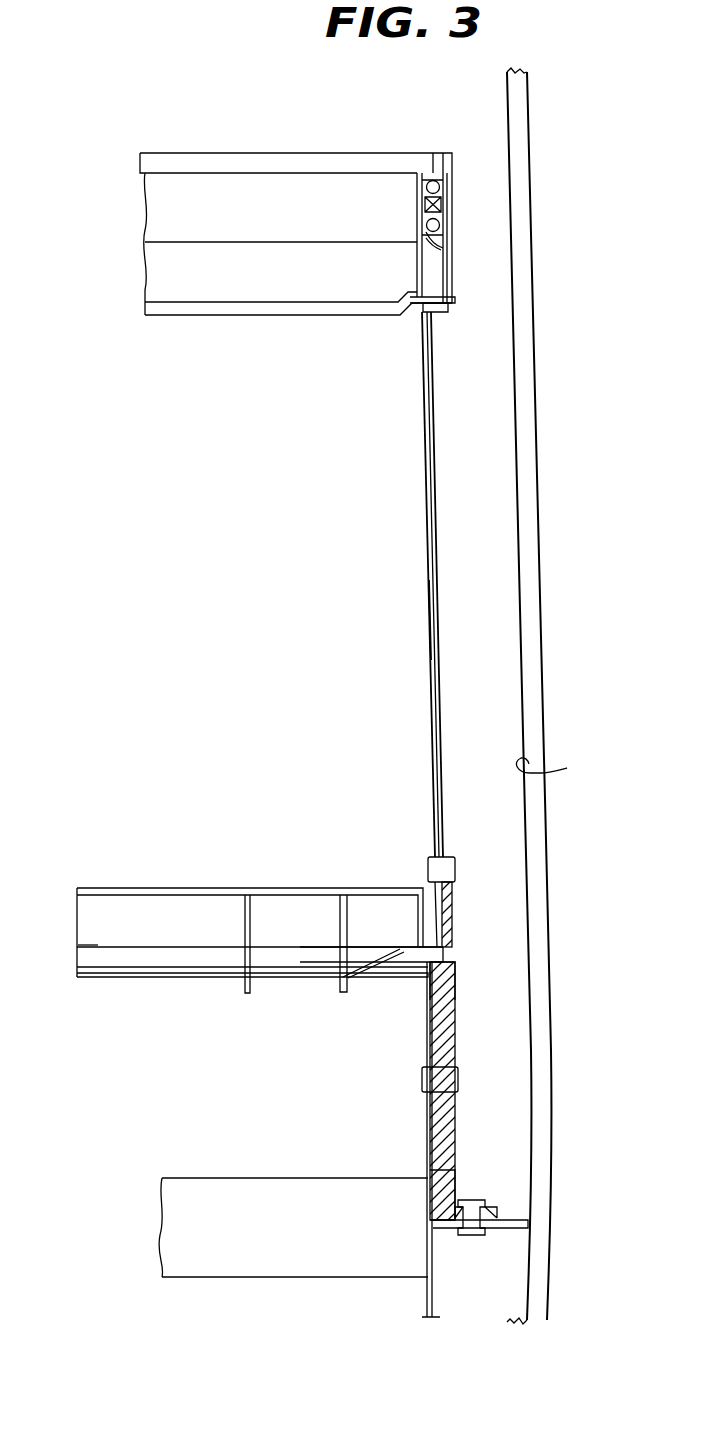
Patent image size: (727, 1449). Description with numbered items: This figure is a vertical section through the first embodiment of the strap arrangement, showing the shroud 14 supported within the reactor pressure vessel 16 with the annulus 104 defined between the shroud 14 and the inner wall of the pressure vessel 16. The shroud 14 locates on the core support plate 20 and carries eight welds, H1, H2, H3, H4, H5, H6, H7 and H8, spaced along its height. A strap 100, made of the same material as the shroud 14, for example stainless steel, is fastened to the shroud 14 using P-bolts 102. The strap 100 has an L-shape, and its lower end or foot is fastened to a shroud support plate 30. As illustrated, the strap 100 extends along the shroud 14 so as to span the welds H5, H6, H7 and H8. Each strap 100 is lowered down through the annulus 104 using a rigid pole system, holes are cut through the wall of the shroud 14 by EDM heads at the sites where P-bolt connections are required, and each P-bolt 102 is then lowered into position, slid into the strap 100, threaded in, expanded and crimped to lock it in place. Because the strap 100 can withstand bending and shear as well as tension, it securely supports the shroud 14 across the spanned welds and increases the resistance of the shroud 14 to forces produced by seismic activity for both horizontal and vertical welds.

The annulus 104 is at (487, 477).
The reactor pressure vessel 16 is at (552, 763).
The weld H1 is at (452, 172).
The weld H2 is at (453, 300).
The weld H3 is at (432, 312).
The shroud 14 is at (439, 718).
The weld H4 is at (430, 622).
The core support plate 20 is at (275, 885).
The weld H5 is at (443, 943).
The weld H6 is at (452, 967).
The strap 100 is at (453, 1045).
The weld H7 is at (455, 1168).
The P-bolt 102 is at (428, 870).
The weld H8 is at (483, 1207).
The shroud support plate 30 is at (515, 1232).